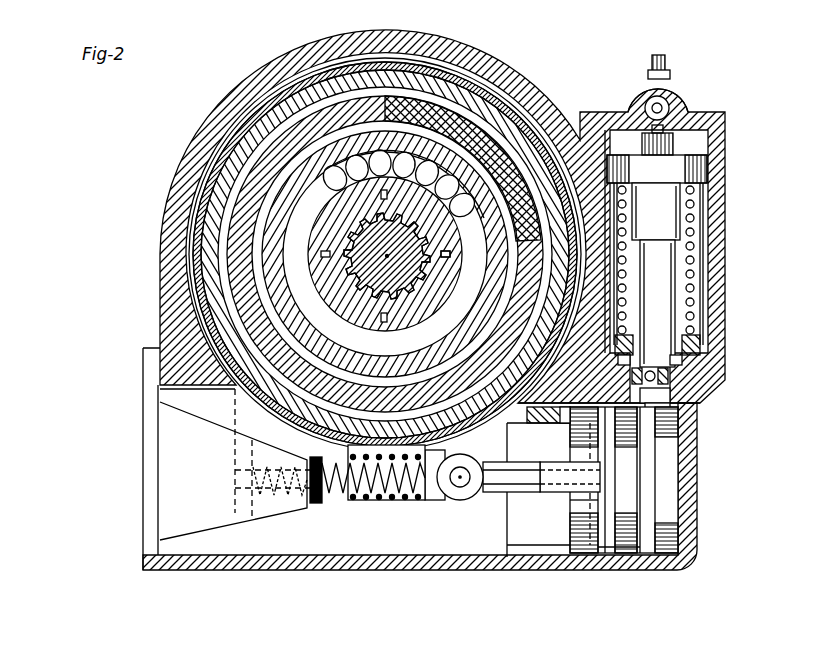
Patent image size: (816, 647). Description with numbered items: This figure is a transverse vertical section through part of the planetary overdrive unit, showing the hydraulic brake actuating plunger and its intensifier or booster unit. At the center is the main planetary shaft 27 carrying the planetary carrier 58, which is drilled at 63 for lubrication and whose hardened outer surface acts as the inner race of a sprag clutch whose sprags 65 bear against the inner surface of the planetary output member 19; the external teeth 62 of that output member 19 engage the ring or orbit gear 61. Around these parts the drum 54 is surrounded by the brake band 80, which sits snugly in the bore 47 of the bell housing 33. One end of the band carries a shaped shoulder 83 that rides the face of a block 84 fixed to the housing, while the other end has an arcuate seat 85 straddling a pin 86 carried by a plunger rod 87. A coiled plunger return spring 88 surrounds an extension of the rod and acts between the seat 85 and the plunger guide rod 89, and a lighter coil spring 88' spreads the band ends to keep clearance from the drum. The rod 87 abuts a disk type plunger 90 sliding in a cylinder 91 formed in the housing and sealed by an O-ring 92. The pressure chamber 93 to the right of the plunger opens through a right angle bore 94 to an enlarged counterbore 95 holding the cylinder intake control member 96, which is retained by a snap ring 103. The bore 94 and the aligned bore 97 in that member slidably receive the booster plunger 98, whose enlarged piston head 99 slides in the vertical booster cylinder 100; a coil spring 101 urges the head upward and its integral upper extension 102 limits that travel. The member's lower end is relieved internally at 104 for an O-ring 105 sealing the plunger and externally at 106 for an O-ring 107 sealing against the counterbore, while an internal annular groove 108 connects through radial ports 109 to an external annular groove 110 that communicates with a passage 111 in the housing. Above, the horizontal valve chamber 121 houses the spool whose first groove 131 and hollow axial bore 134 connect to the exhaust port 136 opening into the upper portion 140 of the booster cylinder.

The output member 19 is at (280, 275).
The main planetary shaft 27 is at (355, 280).
The bell housing 33 is at (184, 153).
The bore 47 is at (245, 118).
The drum 54 is at (207, 266).
The planetary carrier 58 is at (375, 325).
The ring or orbit gear 61 is at (470, 130).
The external teeth 62 is at (497, 222).
The lubrication drilling 63 is at (452, 263).
The sprags 65 is at (335, 180).
The brake band 80 is at (190, 244).
The shaped shoulder 83 is at (312, 503).
The block 84 is at (262, 513).
The arcuate seat 85 is at (460, 501).
The pin 86 is at (468, 493).
The plunger rod 87 is at (522, 490).
The plunger return spring 88 is at (373, 484).
The lighter coil spring 88' is at (318, 505).
The plunger guide rod 89 is at (235, 496).
The disk type plunger 90 is at (580, 512).
The cylinder 91 is at (508, 545).
The O-ring 92 is at (610, 556).
The pressure chamber 93 is at (672, 475).
The right angle bore 94 is at (700, 400).
The counterbore 95 is at (672, 375).
The cylinder intake control member 96 is at (695, 340).
The bore 97 is at (665, 330).
The booster or intensifier plunger 98 is at (670, 284).
The piston head 99 is at (712, 168).
The booster cylinder 100 is at (722, 218).
The coil spring 101 is at (722, 248).
The upper extension 102 is at (706, 136).
The snap ring 103 is at (688, 352).
The internal relief 104 is at (695, 418).
The O-ring 105 is at (672, 433).
The external relief 106 is at (690, 388).
The O-ring 107 is at (590, 420).
The internal annular groove 108 is at (653, 303).
The radial ports 109 is at (688, 360).
The external annular groove 110 is at (654, 242).
The passage 111 is at (590, 410).
The valve chamber 121 is at (672, 95).
The first groove 131 is at (648, 107).
The axial bore 134 is at (646, 100).
The exhaust port 136 is at (682, 112).
The upper portion 140 is at (700, 143).